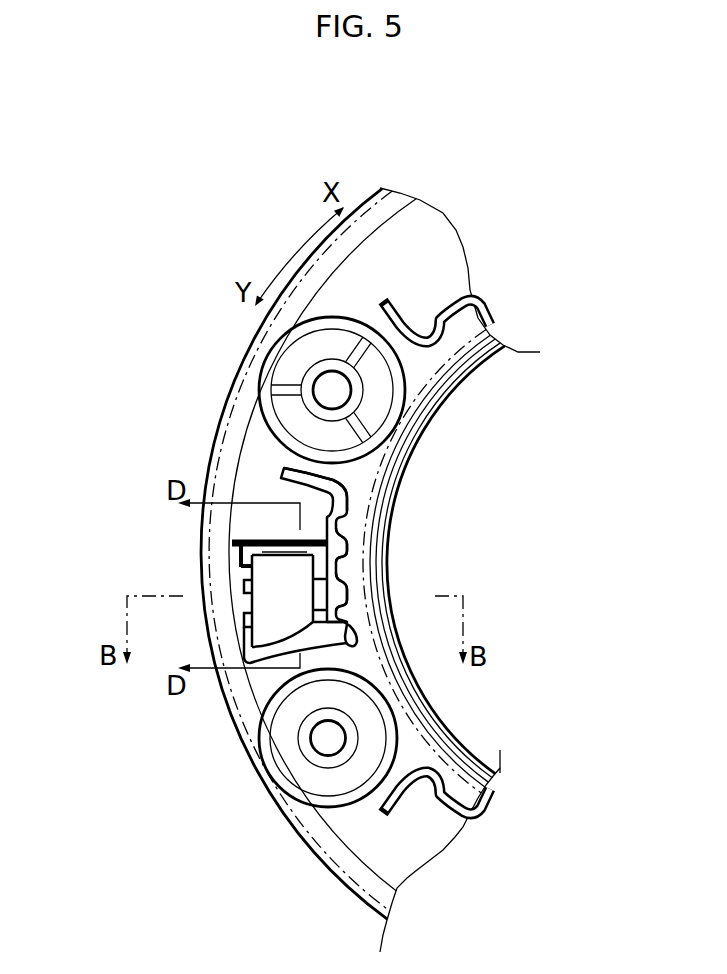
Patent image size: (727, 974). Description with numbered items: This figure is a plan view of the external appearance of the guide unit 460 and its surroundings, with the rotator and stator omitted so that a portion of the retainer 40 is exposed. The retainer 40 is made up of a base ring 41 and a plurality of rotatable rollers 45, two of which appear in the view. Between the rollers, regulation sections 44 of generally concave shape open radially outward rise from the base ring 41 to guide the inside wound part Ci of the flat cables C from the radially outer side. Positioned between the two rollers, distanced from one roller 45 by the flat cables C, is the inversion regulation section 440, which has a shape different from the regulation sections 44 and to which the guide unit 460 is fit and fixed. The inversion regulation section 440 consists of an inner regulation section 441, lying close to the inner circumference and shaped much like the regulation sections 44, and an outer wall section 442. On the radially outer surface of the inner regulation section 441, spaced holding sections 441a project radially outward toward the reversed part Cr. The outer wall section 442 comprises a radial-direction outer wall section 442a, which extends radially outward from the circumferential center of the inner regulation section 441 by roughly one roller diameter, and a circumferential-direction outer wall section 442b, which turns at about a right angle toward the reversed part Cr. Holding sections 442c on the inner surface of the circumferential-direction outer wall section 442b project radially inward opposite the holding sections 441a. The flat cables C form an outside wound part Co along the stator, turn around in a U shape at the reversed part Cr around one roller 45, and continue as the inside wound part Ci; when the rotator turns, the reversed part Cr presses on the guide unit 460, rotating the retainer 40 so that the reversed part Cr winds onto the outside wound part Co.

The retainer 40 is at (374, 204).
The base ring 41 is at (430, 243).
The regulation sections 44 is at (455, 306).
The rotatable rollers 45 is at (290, 360).
The inversion regulation section 440 is at (345, 489).
The inner regulation section 441 is at (335, 522).
The holding sections 441a is at (338, 549).
The outer wall section 442 is at (262, 543).
The radial-direction outer wall section 442a is at (233, 538).
The circumferential-direction outer wall section 442b is at (240, 562).
The holding sections 442c is at (244, 582).
The guide unit 460 is at (320, 596).
The flat cables C is at (219, 428).
The inside wound part Ci is at (462, 748).
The outside wound part Co is at (350, 892).
The reversed part Cr is at (239, 712).